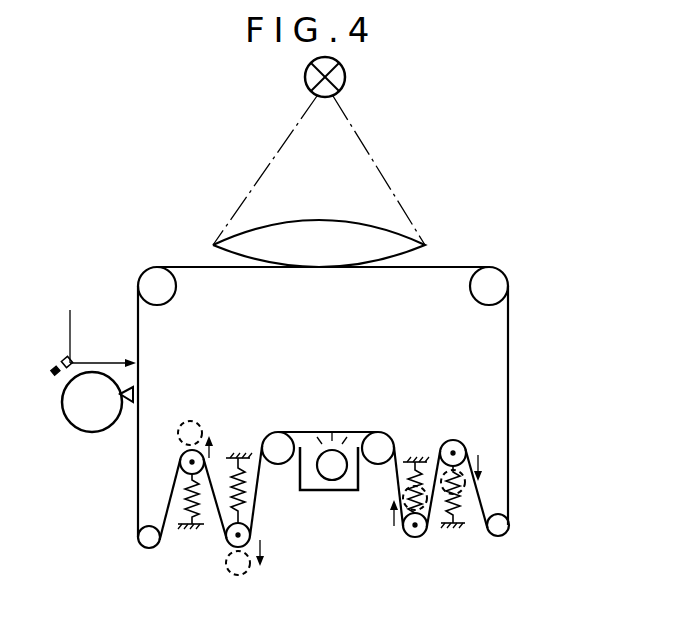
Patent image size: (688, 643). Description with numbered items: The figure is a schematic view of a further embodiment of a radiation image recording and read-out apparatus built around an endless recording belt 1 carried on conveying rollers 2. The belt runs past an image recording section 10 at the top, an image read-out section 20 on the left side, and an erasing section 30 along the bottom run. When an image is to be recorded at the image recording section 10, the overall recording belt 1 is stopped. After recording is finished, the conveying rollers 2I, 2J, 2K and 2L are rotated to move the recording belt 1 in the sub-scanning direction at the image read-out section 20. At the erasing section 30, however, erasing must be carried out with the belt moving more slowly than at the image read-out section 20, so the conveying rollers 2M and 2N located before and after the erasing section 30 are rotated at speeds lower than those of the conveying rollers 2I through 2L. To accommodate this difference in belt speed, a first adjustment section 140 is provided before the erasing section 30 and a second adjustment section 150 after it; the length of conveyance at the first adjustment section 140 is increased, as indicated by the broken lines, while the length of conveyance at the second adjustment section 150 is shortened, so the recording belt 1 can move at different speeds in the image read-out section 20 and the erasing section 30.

The recording belt 1 is at (507, 355).
The conveying rollers 2 is at (58, 333).
The conveying roller 2I is at (492, 287).
The conveying roller 2J is at (157, 280).
The conveying roller 2K is at (148, 549).
The conveying roller 2L is at (505, 534).
The conveying roller 2M is at (278, 440).
The conveying roller 2N is at (378, 440).
The image recording section 10 is at (252, 160).
The image read-out section 20 is at (110, 300).
The erasing section 30 is at (341, 518).
The first adjustment section 140 is at (197, 562).
The second adjustment section 150 is at (464, 550).